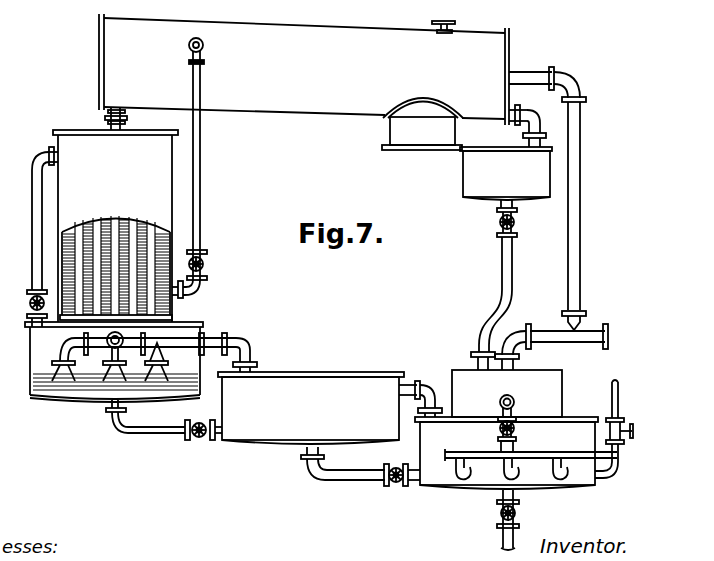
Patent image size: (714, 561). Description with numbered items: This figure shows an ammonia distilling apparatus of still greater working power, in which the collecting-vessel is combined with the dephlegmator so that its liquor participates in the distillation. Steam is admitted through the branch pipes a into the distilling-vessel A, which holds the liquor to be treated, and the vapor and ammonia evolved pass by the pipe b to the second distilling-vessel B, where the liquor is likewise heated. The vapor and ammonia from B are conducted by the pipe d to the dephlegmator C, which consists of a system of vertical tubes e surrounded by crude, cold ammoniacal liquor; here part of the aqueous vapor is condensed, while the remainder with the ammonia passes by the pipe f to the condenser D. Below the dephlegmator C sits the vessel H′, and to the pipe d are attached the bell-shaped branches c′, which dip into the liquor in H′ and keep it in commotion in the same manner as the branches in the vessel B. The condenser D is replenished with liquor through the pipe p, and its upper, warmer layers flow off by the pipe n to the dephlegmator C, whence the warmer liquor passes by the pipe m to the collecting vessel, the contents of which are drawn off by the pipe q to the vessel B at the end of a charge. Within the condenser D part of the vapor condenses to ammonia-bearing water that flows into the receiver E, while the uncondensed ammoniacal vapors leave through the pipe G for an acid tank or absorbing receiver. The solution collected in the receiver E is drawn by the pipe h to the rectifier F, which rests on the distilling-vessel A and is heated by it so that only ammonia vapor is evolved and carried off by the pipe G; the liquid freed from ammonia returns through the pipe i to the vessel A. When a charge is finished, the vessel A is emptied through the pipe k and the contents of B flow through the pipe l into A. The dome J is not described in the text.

The condenser D is at (304, 69).
The pipe p is at (443, 16).
The dome J is at (422, 124).
The receiver E is at (506, 152).
The pipe G is at (551, 218).
The pipe h is at (498, 285).
The rectifier F is at (507, 393).
The pipe b is at (421, 395).
The distilling-vessel A is at (524, 434).
The branch pipes a is at (516, 470).
The pipe i is at (514, 403).
The pipe k is at (514, 521).
The second distilling-vessel B is at (311, 408).
The pipe l is at (360, 466).
The pipe q is at (164, 428).
The dephlegmator C is at (115, 226).
The pipe f is at (120, 119).
The pipe n is at (194, 168).
The pipe m is at (36, 237).
The vertical tubes e is at (116, 265).
The vessel H′ is at (114, 362).
The pipe d is at (169, 352).
The bell-shaped branches c′ is at (118, 356).